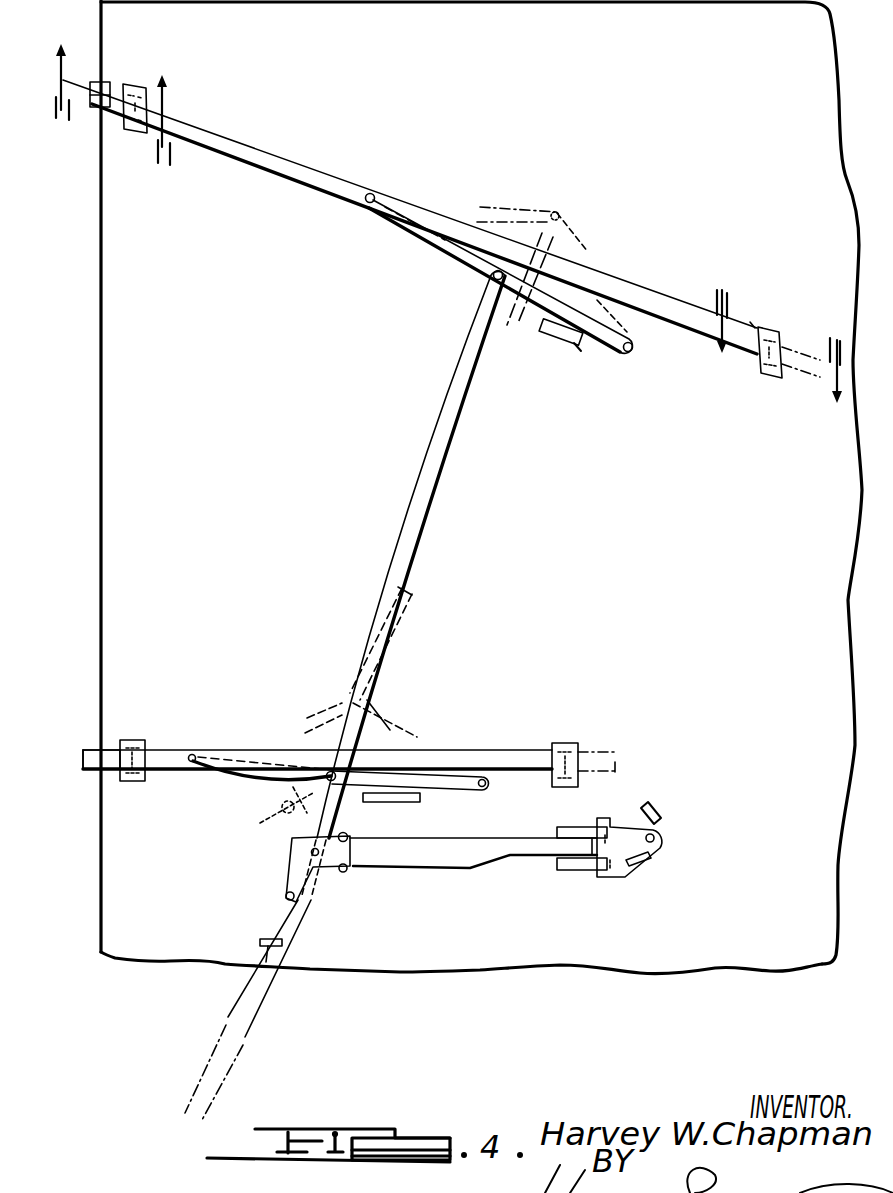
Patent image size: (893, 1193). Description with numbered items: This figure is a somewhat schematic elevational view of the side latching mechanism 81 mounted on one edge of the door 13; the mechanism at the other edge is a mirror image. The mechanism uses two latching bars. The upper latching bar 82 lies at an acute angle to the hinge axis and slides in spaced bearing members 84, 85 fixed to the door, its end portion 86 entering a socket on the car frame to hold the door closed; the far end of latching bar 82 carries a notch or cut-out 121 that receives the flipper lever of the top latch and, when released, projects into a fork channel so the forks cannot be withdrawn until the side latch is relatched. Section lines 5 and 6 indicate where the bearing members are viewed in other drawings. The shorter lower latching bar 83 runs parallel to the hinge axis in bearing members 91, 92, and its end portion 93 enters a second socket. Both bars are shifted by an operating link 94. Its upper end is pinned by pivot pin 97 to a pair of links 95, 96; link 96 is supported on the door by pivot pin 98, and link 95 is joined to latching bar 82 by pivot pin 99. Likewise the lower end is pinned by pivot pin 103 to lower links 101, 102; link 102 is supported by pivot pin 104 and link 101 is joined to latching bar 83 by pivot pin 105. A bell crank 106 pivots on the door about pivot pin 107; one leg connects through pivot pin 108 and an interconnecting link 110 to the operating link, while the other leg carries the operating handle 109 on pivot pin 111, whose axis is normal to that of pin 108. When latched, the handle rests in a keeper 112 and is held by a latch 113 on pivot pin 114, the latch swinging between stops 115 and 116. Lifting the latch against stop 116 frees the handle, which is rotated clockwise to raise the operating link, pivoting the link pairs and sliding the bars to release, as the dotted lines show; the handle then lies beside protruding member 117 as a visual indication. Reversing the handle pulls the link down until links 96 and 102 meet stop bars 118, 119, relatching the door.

The door 13 is at (96, 458).
The side latching mechanism 81 is at (449, 158).
The latching bar 82 is at (260, 136).
The bearing member 84 is at (133, 84).
The end portion 86 is at (98, 82).
The bearing member 85 is at (768, 326).
The notch or cut-out 121 is at (752, 324).
The section line 5- 5 is at (124, 85).
The section line 6- 6 is at (779, 369).
The link 95 is at (450, 255).
The pivot pin 99 is at (368, 204).
The pivot pin 97 is at (483, 279).
The pivot pin 98 is at (637, 352).
The link 96 is at (563, 319).
The stop bar 118 is at (577, 348).
The operating link 94 is at (420, 523).
The latching bar 83 is at (175, 742).
The end portion 93 is at (82, 757).
The bearing member 91 is at (132, 740).
The bearing member 92 is at (566, 743).
The lower link 101 is at (258, 782).
The pivot pin 105 is at (195, 756).
The pivot pin 103 is at (337, 773).
The lower link 102 is at (441, 791).
The pivot pin 104 is at (486, 775).
The interconnecting link 110 is at (282, 809).
The bell crank 106 is at (289, 847).
The pivot pin 107 is at (291, 872).
The pivot pin 108 is at (287, 905).
The pivot pin 111 is at (343, 873).
The stop bar 119 is at (397, 803).
The operating handle 109 is at (453, 862).
The keeper 112 is at (573, 870).
The latch 113 is at (622, 830).
The pivot pin 114 is at (657, 840).
The stop 115 is at (652, 870).
The stop 116 is at (660, 806).
The protruding member 117 is at (268, 965).